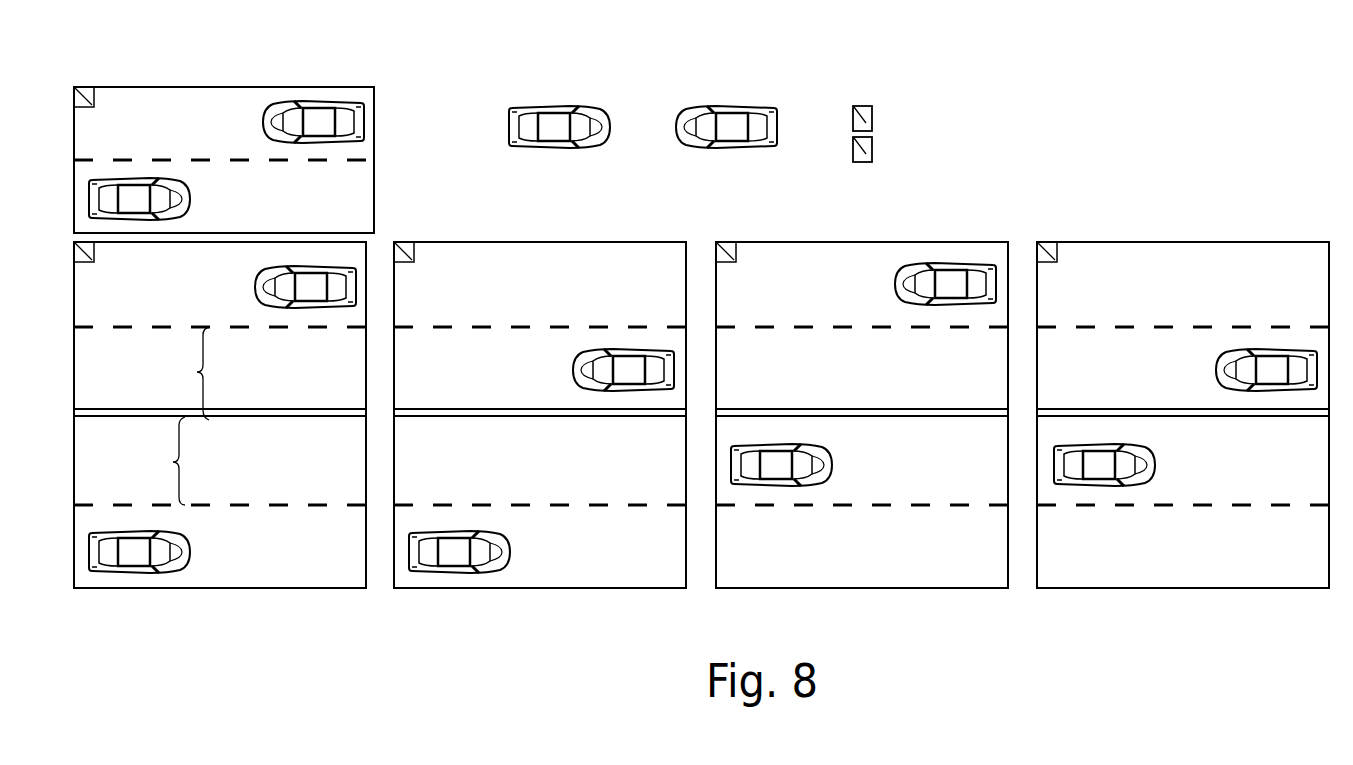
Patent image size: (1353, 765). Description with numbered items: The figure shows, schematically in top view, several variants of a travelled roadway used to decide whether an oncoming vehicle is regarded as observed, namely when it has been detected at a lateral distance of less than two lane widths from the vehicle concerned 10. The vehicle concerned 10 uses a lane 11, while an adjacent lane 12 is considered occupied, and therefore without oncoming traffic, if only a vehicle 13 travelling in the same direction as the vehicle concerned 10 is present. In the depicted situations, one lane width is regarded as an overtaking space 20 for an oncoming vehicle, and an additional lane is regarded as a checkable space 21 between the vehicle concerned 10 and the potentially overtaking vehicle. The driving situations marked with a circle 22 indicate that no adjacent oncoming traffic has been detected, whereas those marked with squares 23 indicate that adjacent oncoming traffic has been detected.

The vehicle concerned 10 is at (553, 127).
The lane 11 is at (343, 203).
The adjacent lane 12 is at (345, 152).
The vehicle 13 is at (733, 127).
The overtaking space 20 is at (197, 372).
The checkable space 21 is at (173, 462).
The circle 22 is at (859, 106).
The square 23 is at (860, 162).